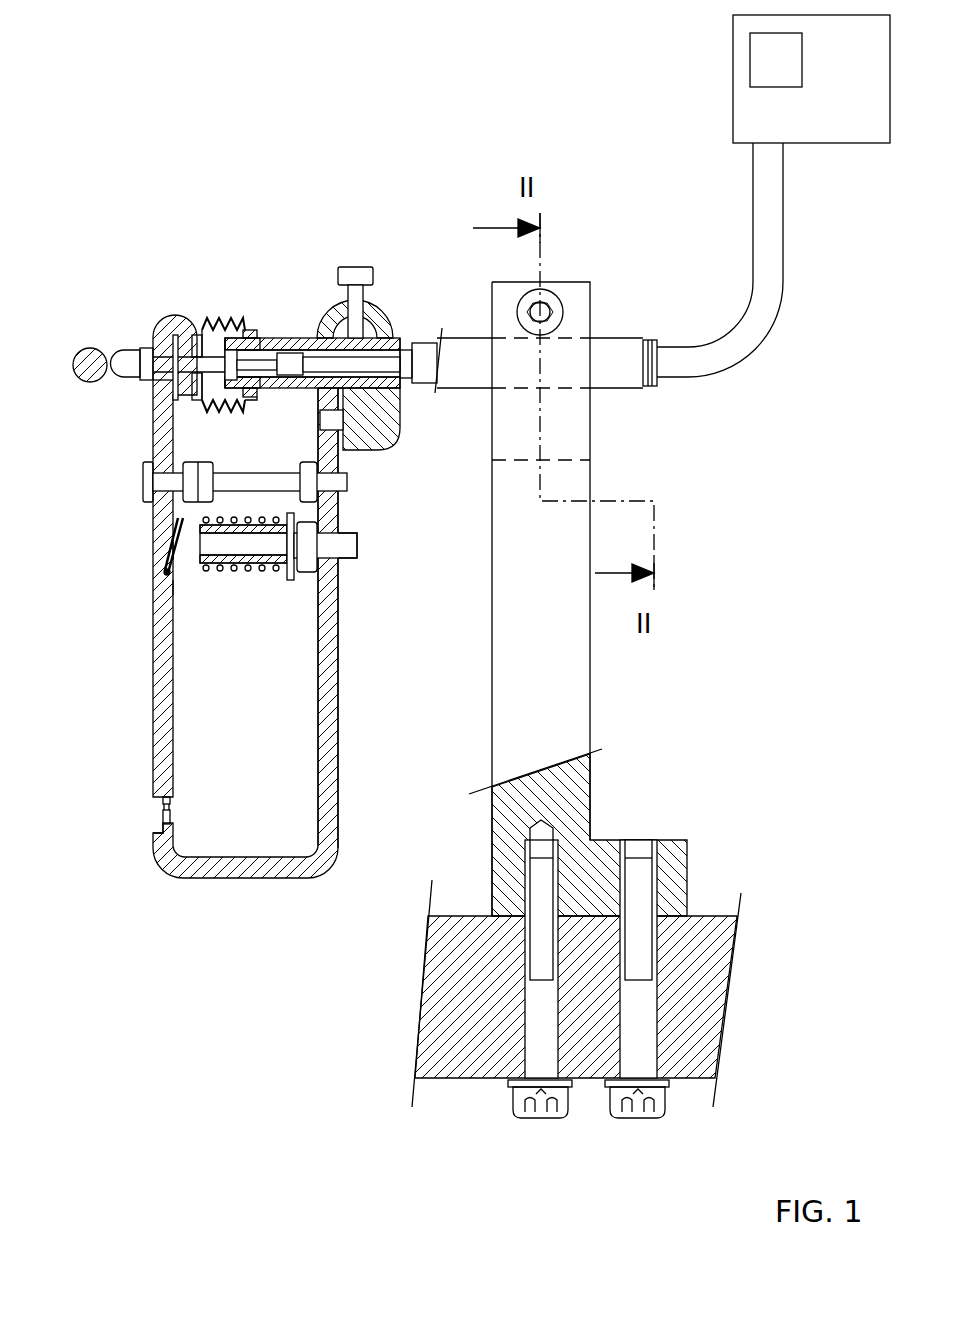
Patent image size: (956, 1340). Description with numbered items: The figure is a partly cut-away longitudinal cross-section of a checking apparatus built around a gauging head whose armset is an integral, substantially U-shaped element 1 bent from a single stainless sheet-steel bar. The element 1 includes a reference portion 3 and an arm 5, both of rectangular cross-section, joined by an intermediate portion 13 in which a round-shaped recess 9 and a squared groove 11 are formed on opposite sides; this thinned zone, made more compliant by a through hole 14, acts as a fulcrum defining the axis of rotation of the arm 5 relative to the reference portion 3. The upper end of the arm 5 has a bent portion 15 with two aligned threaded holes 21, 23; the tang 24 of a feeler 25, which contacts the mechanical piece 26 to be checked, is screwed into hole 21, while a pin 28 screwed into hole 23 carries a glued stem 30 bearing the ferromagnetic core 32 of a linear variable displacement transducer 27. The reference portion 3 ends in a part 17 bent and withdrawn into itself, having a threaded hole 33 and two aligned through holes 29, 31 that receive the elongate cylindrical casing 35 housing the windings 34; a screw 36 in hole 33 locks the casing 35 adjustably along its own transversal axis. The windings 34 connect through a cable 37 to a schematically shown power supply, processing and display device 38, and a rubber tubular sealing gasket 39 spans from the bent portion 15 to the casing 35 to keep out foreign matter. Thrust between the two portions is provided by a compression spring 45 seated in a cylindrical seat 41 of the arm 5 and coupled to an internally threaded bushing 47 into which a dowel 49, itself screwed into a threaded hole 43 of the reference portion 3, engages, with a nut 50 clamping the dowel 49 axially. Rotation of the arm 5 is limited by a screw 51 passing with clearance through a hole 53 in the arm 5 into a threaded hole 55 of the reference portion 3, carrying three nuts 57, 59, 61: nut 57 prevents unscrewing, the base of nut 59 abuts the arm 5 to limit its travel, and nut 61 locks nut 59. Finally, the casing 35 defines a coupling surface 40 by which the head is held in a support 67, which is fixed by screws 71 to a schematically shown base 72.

The U-shaped element 1 is at (247, 882).
The reference portion 3 is at (332, 728).
The arm 5 is at (158, 712).
The round-shaped recess 9 is at (170, 803).
The squared groove 11 is at (160, 828).
The intermediate portion 13 is at (163, 800).
The through hole 14 is at (170, 818).
The bent portion 15 is at (190, 398).
The part bent and withdrawn into itself 17 is at (385, 445).
The threaded hole 21 is at (150, 382).
The threaded hole 23 is at (153, 410).
The tang 24 is at (150, 340).
The feeler 25 is at (128, 358).
The mechanical piece 26 is at (82, 350).
The linear variable displacement transducer 27 is at (293, 390).
The pin 28 is at (200, 335).
The through hole 29 is at (398, 418).
The stem 30 is at (252, 331).
The through hole 31 is at (400, 397).
The core 32 is at (288, 339).
The threaded hole 33 is at (366, 298).
The windings 34 is at (273, 343).
The casing 35 is at (410, 341).
The screw 36 is at (343, 266).
The cable 37 is at (762, 200).
The power supply, processing and display device 38 is at (742, 116).
The tubular sealing gasket 39 is at (252, 397).
The coupling surface 40 is at (617, 333).
The cylindrical seat 41 is at (173, 588).
The threaded hole 43 is at (343, 560).
The compression spring 45 is at (200, 573).
The bushing 47 is at (255, 572).
The dowel 49 is at (345, 552).
The nut 50 is at (290, 578).
The screw 51 is at (146, 480).
The through hole 53 is at (167, 500).
The threaded hole 55 is at (330, 498).
The nut 57 is at (330, 523).
The nut 59 is at (170, 519).
The nut 61 is at (173, 552).
The support 67 is at (578, 430).
The screws 71 is at (520, 1118).
The base 72 is at (447, 1060).